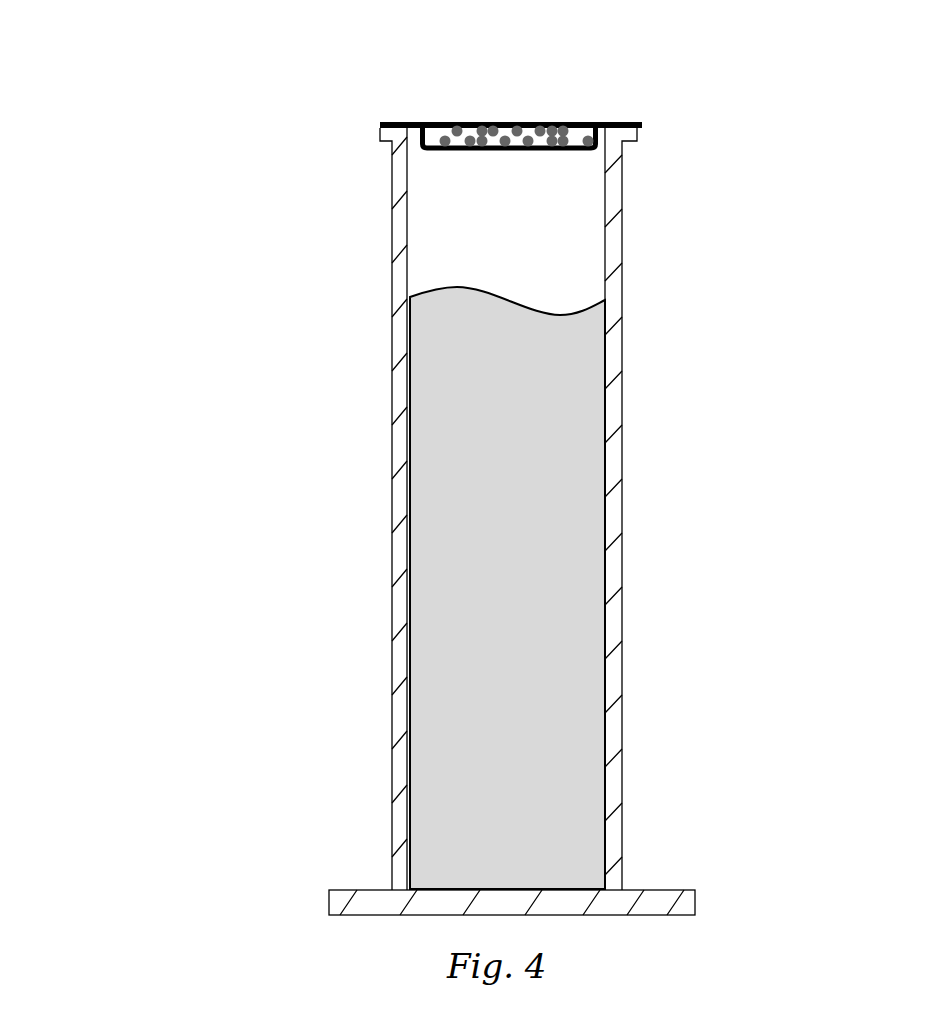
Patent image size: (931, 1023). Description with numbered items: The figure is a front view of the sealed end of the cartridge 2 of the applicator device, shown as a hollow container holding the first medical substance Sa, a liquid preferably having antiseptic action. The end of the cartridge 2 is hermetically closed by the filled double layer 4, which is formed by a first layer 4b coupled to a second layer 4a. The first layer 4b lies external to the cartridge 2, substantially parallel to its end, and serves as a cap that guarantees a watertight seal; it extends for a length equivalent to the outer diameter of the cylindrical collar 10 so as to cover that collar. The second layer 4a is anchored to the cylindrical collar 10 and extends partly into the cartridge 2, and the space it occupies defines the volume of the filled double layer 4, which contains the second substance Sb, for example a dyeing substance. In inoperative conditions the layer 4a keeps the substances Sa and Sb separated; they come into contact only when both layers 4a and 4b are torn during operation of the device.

The cylindrical collar 10 is at (378, 133).
The cartridge 2 is at (622, 378).
The filled double layer 4 is at (460, 121).
The second layer 4a is at (548, 157).
The first layer 4b is at (585, 121).
The first medical substance Sa is at (551, 618).
The second substance Sb is at (454, 152).